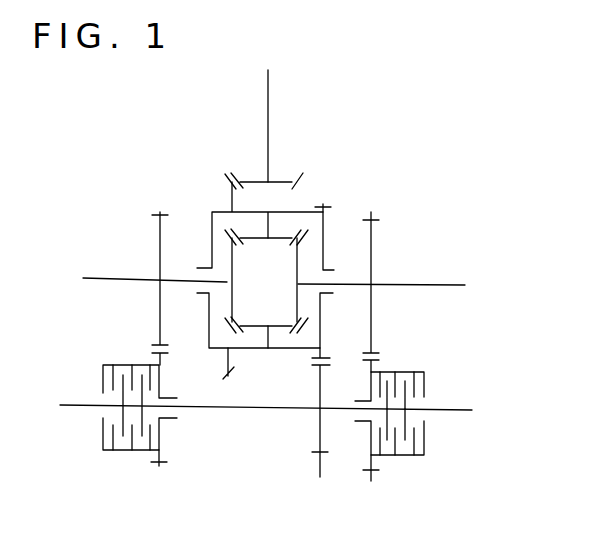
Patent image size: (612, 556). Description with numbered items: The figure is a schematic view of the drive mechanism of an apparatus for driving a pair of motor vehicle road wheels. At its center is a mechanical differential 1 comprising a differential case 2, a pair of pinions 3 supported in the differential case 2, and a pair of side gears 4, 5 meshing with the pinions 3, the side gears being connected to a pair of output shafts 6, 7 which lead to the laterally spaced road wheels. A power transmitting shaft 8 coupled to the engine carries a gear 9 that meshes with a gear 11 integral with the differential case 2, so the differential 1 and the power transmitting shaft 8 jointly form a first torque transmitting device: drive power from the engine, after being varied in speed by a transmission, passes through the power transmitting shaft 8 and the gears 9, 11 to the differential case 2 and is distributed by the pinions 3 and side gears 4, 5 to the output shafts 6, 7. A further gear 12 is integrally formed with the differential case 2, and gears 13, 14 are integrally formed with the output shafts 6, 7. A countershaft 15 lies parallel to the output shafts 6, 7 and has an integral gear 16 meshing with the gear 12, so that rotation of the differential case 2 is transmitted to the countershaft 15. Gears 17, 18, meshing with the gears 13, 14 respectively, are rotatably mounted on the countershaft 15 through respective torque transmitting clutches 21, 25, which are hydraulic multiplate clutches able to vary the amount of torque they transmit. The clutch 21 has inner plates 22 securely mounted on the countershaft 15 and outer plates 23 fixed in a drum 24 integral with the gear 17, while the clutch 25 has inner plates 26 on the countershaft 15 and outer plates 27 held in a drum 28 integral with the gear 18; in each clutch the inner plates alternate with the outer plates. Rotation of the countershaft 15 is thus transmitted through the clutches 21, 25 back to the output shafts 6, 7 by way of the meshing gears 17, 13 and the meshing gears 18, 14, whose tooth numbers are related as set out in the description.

The mechanical differential 1 is at (262, 264).
The differential case 2 is at (283, 350).
The pinions 3 is at (278, 238).
The side gear 4 is at (232, 258).
The side gear 5 is at (300, 312).
The output shaft 6 is at (112, 280).
The output shaft 7 is at (445, 284).
The power transmitting shaft 8 is at (268, 96).
The gear 9 is at (277, 181).
The gear 11 is at (228, 366).
The gear 12 is at (328, 197).
The gear 13 is at (160, 213).
The gear 14 is at (373, 210).
The countershaft 15 is at (253, 412).
The gear 16 is at (318, 462).
The gear 17 is at (165, 466).
The gear 18 is at (368, 480).
The torque transmitting clutch 21 is at (127, 427).
The inner plates 22 is at (159, 423).
The outer plates 23 is at (113, 370).
The drum 24 is at (110, 452).
The torque transmitting clutch 25 is at (407, 390).
The inner plates 26 is at (372, 397).
The outer plates 27 is at (405, 449).
The drum 28 is at (408, 372).